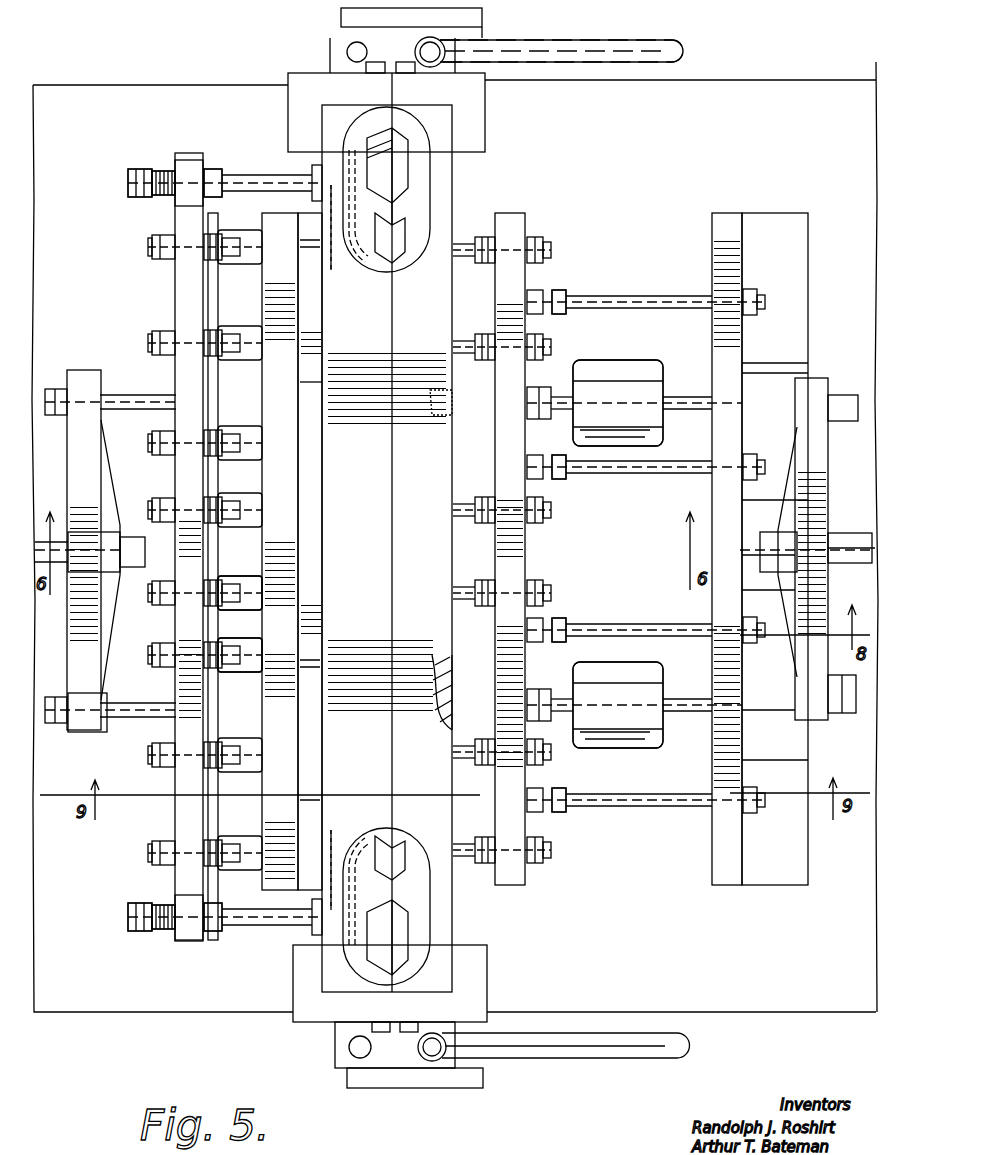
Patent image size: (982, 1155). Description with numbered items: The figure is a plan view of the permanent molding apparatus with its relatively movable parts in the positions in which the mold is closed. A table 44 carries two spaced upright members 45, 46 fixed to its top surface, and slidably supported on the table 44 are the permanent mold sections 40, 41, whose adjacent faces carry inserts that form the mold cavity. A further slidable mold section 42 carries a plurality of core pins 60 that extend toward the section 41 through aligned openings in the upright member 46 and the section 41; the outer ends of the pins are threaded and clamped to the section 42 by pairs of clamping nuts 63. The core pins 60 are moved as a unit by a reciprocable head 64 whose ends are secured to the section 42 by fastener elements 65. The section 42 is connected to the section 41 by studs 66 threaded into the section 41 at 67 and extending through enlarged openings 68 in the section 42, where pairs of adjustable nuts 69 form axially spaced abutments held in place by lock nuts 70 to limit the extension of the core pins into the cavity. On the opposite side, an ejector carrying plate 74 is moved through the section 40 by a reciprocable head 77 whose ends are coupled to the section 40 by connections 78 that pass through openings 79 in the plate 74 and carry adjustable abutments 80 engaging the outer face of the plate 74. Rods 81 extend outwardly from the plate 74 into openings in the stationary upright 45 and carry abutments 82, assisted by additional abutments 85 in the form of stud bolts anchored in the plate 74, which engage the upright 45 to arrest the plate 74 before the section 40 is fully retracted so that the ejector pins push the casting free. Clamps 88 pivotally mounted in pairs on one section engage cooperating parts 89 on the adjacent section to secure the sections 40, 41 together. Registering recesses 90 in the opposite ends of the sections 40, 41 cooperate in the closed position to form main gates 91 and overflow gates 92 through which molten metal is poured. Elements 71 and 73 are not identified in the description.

The permanent mold section 40 is at (450, 214).
The permanent mold section 41 is at (313, 379).
The mold section 42 is at (182, 280).
The table 44 is at (136, 1012).
The upright member 45 is at (720, 335).
The upright member 46 is at (272, 413).
The core pins 60 is at (243, 245).
The clamping nuts 63 is at (172, 640).
The reciprocable head 64 is at (80, 482).
The fastener elements 65 is at (141, 404).
The studs 66 is at (255, 183).
The threaded engagement 67 is at (342, 547).
The enlarged openings 68 is at (194, 160).
The adjustable nuts 69 is at (212, 170).
The lock nuts 70 is at (222, 175).
The wall 71 is at (307, 270).
The plate 73 is at (297, 708).
The ejector carrying plate 74 is at (520, 820).
The reciprocable head 77 is at (812, 496).
The connections 78 is at (635, 381).
The openings 79 is at (495, 418).
The adjustable abutments 80 is at (540, 392).
The rods 81 is at (660, 300).
The abutment 82 is at (566, 480).
The additional abutments 85 is at (560, 300).
The clamps 88 is at (468, 21).
The cooperating parts 89 is at (411, 1058).
The registering recesses 90 is at (400, 175).
The main gates 91 is at (375, 135).
The overflow gates 92 is at (387, 268).